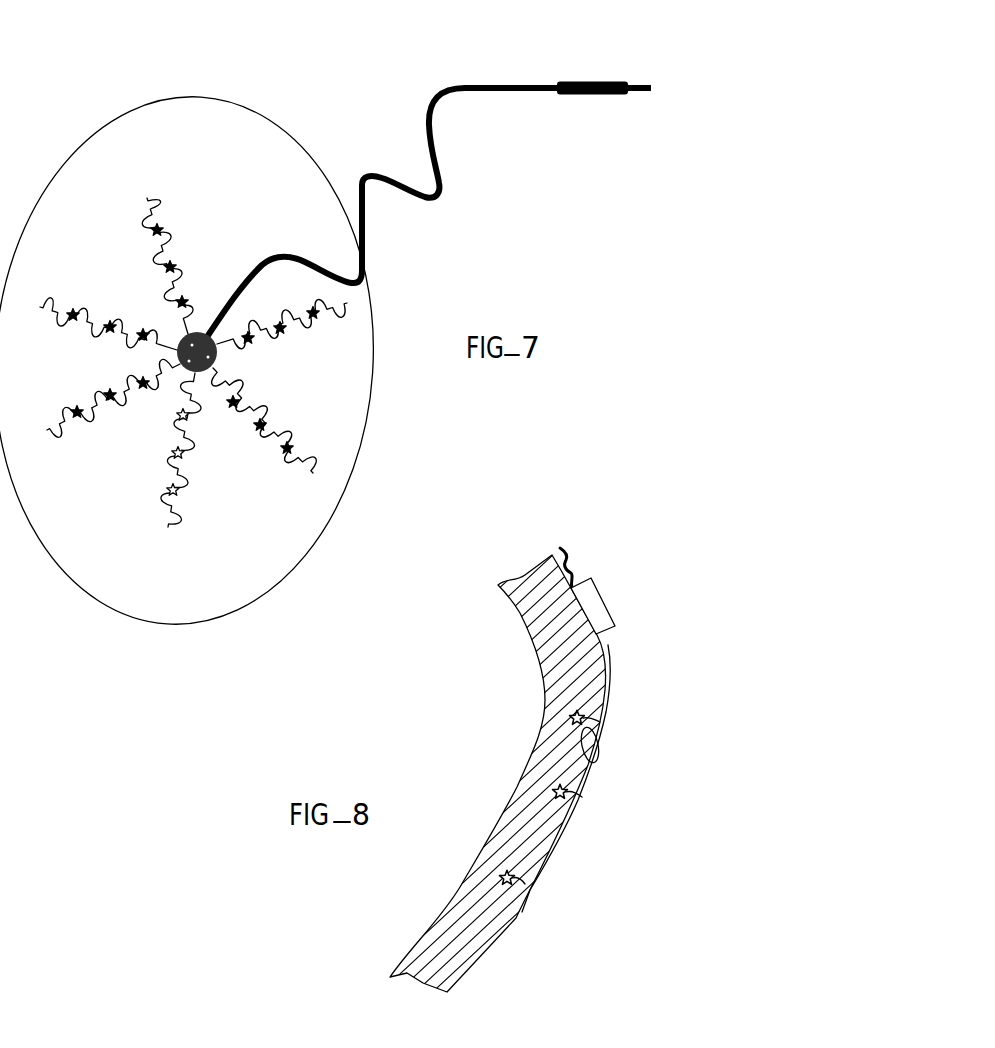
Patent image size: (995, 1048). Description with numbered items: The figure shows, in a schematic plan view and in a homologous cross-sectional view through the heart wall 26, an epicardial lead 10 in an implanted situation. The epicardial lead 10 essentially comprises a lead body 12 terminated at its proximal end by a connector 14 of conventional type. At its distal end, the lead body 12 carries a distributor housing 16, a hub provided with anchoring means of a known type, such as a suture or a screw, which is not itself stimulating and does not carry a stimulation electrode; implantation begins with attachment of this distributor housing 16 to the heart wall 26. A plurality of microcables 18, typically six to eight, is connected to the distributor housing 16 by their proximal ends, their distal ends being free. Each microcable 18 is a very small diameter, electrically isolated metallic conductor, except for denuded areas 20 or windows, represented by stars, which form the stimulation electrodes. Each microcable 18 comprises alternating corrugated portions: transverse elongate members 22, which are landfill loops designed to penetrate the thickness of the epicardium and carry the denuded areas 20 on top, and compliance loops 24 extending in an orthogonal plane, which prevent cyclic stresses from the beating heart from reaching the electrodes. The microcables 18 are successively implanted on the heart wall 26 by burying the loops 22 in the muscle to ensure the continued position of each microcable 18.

In FIG. 7, the epicardial lead 10 is at (335, 132).
In FIG. 7, the lead body 12 is at (378, 176).
In FIG. 8, the lead body 12 is at (580, 543).
In FIG. 7, the connector 14 is at (594, 80).
In FIG. 7, the distributor housing 16 is at (204, 333).
In FIG. 8, the distributor housing 16 is at (598, 609).
In FIG. 7, the microcable 18 is at (157, 253).
In FIG. 8, the microcable 18 is at (608, 693).
In FIG. 7, the denuded area 20 is at (173, 265).
In FIG. 8, the denuded area 20 is at (577, 713).
In FIG. 8, the transverse elongate member 22 is at (592, 747).
In FIG. 7, the compliance loop 24 is at (172, 290).
In FIG. 8, the heart wall 26 is at (524, 573).